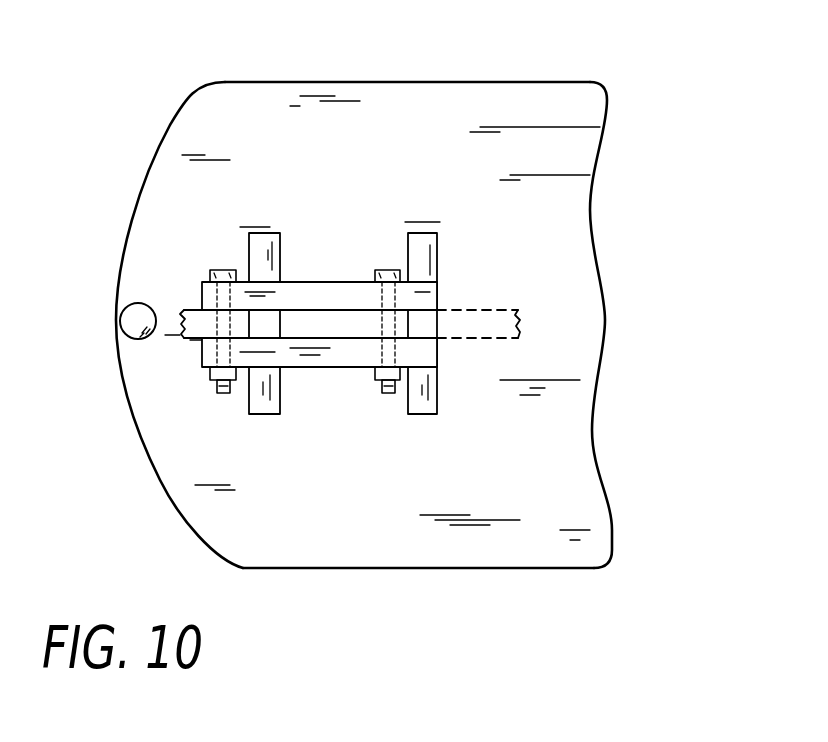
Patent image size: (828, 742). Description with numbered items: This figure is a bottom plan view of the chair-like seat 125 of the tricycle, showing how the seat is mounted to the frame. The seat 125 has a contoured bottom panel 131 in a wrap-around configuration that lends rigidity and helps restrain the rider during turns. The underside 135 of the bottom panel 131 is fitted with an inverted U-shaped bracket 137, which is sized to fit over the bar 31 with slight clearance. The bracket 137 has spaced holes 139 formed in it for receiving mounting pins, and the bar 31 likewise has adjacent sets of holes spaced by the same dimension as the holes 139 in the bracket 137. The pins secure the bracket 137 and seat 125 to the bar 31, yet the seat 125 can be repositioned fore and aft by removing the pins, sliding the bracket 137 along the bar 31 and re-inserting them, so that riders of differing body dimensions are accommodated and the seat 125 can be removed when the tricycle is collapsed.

The seat 125 is at (145, 173).
The underside 135 is at (422, 98).
The bottom panel 131 is at (492, 570).
The inverted U-shaped bracket 137 is at (167, 295).
The bar 31 is at (478, 322).
The spaced holes 139 is at (208, 290).